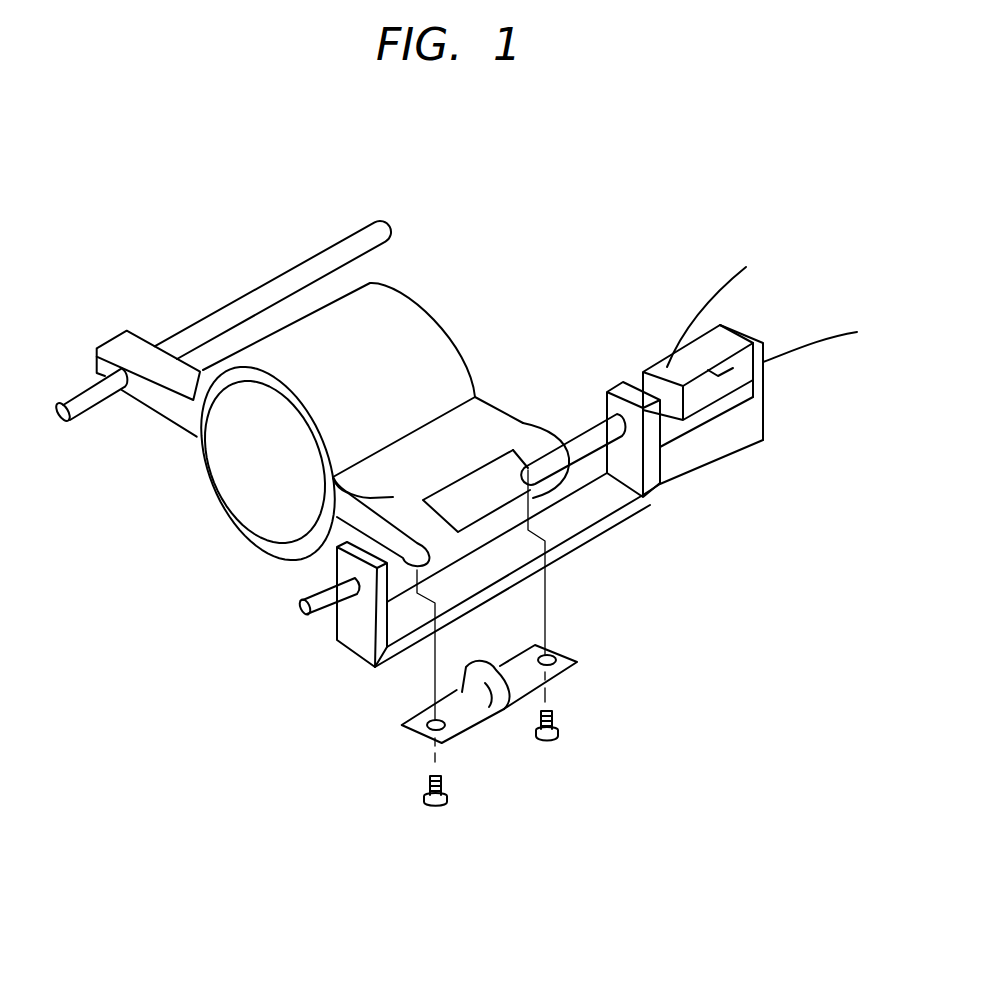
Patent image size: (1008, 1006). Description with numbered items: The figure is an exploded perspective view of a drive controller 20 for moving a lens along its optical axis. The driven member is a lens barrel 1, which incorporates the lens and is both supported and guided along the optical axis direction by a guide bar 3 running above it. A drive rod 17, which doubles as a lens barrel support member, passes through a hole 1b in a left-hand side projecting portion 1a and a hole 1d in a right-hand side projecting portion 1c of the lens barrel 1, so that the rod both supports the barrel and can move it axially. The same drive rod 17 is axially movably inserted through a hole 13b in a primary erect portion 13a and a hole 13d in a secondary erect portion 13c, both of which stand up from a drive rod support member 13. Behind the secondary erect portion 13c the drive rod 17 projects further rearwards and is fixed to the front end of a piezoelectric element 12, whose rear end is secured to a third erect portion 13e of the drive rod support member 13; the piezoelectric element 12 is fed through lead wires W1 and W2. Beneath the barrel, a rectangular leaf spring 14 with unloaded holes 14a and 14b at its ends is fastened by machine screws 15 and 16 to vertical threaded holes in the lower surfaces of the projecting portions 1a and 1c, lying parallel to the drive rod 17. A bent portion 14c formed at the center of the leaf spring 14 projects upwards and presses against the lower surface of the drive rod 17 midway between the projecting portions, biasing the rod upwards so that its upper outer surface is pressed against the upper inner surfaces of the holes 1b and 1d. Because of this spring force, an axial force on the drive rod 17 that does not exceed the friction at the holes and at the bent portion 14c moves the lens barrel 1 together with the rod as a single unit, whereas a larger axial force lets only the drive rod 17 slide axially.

The lens barrel 1 is at (362, 421).
The left-hand side projecting portion 1a is at (333, 478).
The hole 1b is at (358, 548).
The right-hand side projecting portion 1c is at (530, 440).
The hole 1d is at (531, 500).
The guide bar 3 is at (355, 240).
The piezoelectric element 12 is at (667, 367).
The drive rod support member 13 is at (539, 505).
The primary erect portion 13a is at (360, 645).
The hole 13b is at (355, 610).
The secondary erect portion 13c is at (661, 458).
The hole 13d is at (645, 458).
The third erect portion 13e is at (767, 407).
The leaf spring 14 is at (491, 756).
The unloaded hole 14a is at (406, 725).
The unloaded hole 14b is at (557, 660).
The bent portion 14c is at (487, 688).
The machine screw 15 is at (428, 782).
The machine screw 16 is at (557, 730).
The drive rod 17 is at (588, 440).
The drive controller 20 is at (240, 205).
The lead wire W1 is at (835, 340).
The lead wire W2 is at (723, 290).